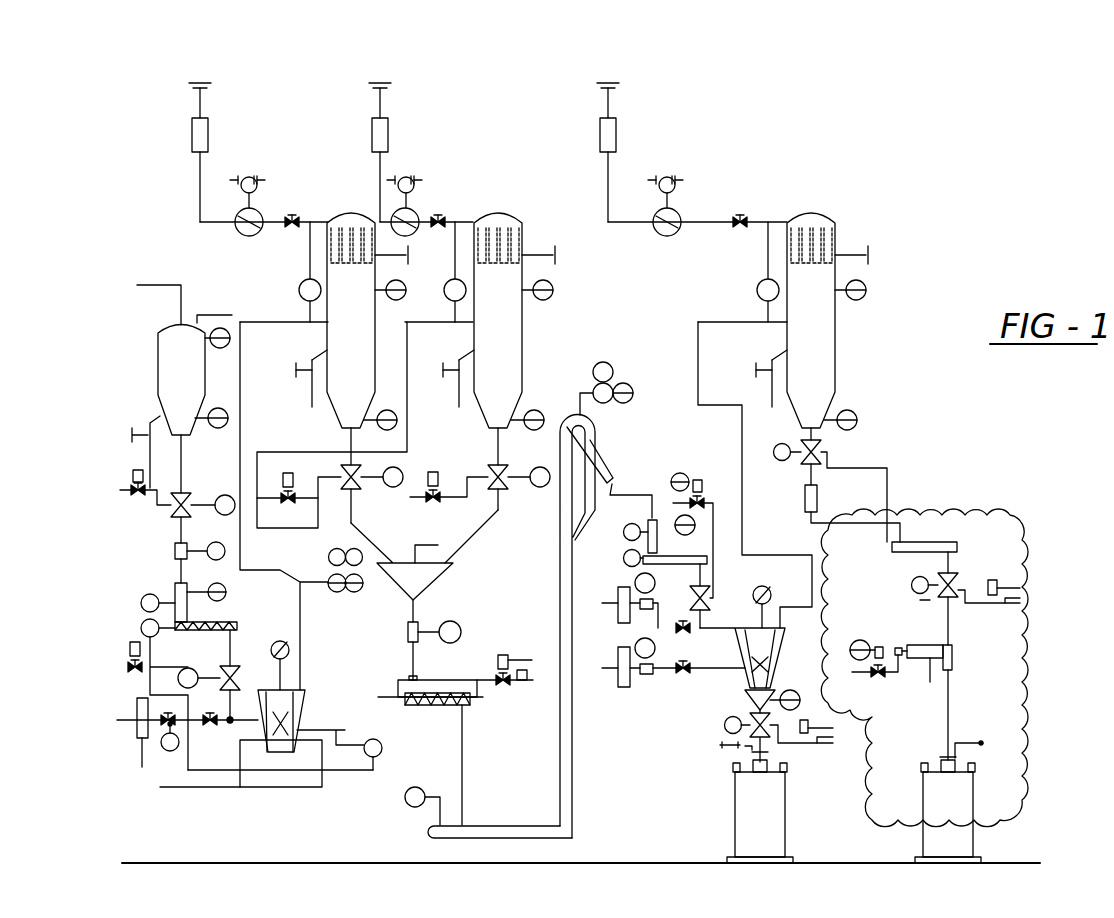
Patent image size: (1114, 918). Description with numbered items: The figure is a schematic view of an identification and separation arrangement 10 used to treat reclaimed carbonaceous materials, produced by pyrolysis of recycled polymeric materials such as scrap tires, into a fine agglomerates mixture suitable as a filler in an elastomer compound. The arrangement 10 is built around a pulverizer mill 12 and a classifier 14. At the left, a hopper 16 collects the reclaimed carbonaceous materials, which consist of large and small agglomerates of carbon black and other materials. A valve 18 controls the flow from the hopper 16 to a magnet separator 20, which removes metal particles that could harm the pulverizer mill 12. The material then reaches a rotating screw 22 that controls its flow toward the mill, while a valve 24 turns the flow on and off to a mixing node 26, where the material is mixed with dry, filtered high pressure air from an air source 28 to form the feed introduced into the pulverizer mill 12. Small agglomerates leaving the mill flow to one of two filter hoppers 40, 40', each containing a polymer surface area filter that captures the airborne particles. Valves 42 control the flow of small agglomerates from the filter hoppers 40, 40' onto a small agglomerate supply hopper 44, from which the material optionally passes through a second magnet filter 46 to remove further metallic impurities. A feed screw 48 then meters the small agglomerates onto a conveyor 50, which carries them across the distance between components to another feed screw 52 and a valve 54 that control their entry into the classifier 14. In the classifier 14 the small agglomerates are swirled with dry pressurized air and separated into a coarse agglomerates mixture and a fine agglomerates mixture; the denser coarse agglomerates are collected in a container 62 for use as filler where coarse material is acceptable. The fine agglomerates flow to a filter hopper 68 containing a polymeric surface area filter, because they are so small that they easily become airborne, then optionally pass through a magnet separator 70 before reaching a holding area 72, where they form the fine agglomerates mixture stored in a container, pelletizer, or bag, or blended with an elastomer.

The identification and separation arrangement 10 is at (932, 178).
The pulverizer mill 12 is at (330, 687).
The classifier 14 is at (688, 718).
The hopper 16 is at (180, 342).
The valve 18 is at (177, 517).
The magnet separator 20 is at (174, 548).
The screw 22 is at (238, 621).
The valve 24 is at (242, 670).
The mixing node 26 is at (230, 722).
The air source 28 is at (140, 740).
The filter hopper 40 is at (352, 284).
The filter hopper 40' is at (499, 282).
The valve 42 is at (358, 492).
The small agglomerate supply hopper 44 is at (463, 580).
The second magnet filter 46 is at (420, 622).
The feed screw 48 is at (440, 707).
The conveyor 50 is at (553, 843).
The feed screw 52 is at (705, 553).
The valve 54 is at (707, 608).
The container 62 is at (767, 817).
The filter hopper 68 is at (820, 340).
The magnet separator 70 is at (802, 497).
The holding area 72 is at (960, 840).